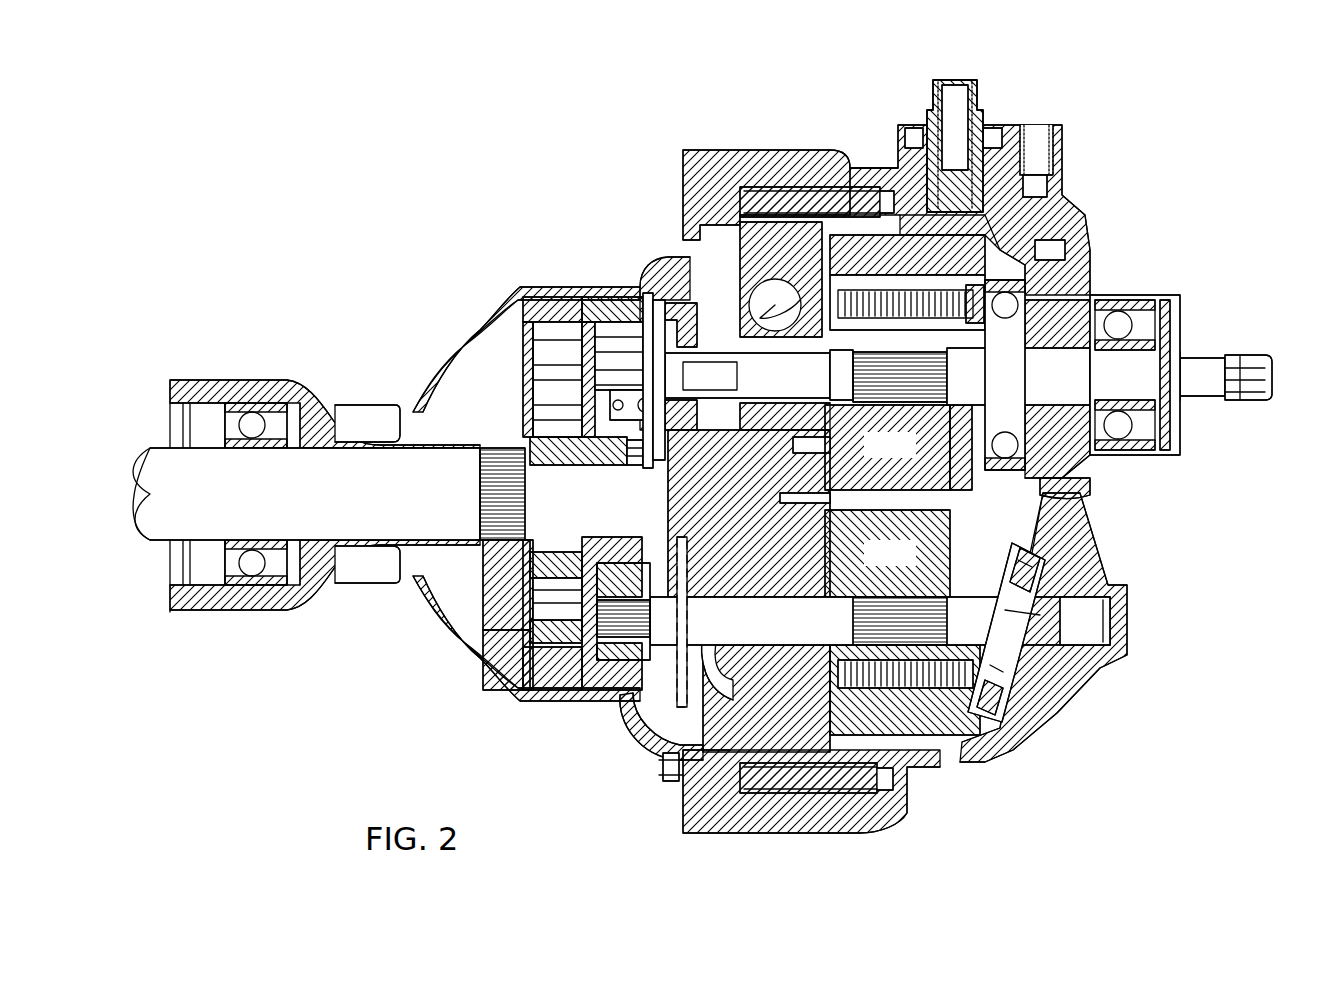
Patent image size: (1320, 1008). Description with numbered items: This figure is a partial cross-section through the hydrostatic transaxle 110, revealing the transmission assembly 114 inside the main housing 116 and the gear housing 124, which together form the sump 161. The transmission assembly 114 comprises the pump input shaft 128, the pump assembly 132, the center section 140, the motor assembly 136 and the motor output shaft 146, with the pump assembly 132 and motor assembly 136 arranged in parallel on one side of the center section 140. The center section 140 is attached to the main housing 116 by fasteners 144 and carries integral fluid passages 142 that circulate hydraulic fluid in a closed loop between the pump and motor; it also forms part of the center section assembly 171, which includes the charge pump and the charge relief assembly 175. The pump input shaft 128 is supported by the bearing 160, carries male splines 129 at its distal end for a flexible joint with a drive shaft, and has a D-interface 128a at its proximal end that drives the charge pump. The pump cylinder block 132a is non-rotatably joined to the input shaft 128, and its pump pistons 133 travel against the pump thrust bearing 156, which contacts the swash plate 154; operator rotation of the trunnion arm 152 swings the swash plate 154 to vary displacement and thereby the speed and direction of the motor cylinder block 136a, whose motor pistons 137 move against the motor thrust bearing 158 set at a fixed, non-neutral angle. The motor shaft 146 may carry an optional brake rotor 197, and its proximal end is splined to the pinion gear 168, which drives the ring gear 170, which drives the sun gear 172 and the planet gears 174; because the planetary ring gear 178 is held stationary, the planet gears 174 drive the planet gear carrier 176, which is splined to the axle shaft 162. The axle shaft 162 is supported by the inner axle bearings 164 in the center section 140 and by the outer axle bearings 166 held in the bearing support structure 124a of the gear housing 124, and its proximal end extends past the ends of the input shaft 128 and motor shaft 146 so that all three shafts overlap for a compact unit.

The hydrostatic transaxle 110 is at (290, 128).
The transmission assembly 114 is at (862, 132).
The main housing 116 is at (1078, 680).
The gear housing 124 is at (445, 357).
The bearing support structure 124a is at (226, 380).
The pump input shaft 128 is at (1060, 386).
The D-interface 128a is at (735, 375).
The male splines 129 is at (1258, 398).
The pump assembly 132 is at (960, 490).
The pump cylinder block 132a is at (914, 456).
The pump pistons 133 is at (960, 285).
The motor assembly 136 is at (958, 733).
The motor cylinder block 136a is at (914, 564).
The motor pistons 137 is at (985, 648).
The center section 140 is at (760, 255).
The fluid passages 142 is at (768, 292).
The fasteners 144 is at (722, 192).
The motor output shaft 146 is at (786, 628).
The trunnion arm 152 is at (1035, 238).
The swash plate 154 is at (1105, 470).
The pump thrust bearing 156 is at (1000, 300).
The motor thrust bearing 158 is at (1015, 735).
The bearing 160 is at (1112, 318).
The sump 161 is at (676, 770).
The axle shaft 162 is at (380, 504).
The inner axle bearings 164 is at (712, 528).
The outer axle bearings 166 is at (255, 555).
The pinion gear 168 is at (612, 585).
The ring gear 170 is at (605, 680).
The center section assembly 171 is at (664, 276).
The sun gear 172 is at (552, 450).
The planet gears 174 is at (550, 545).
The charge relief assembly 175 is at (622, 365).
The planet gear carrier 176 is at (488, 555).
The planetary ring gear 178 is at (535, 675).
The brake rotor 197 is at (680, 742).